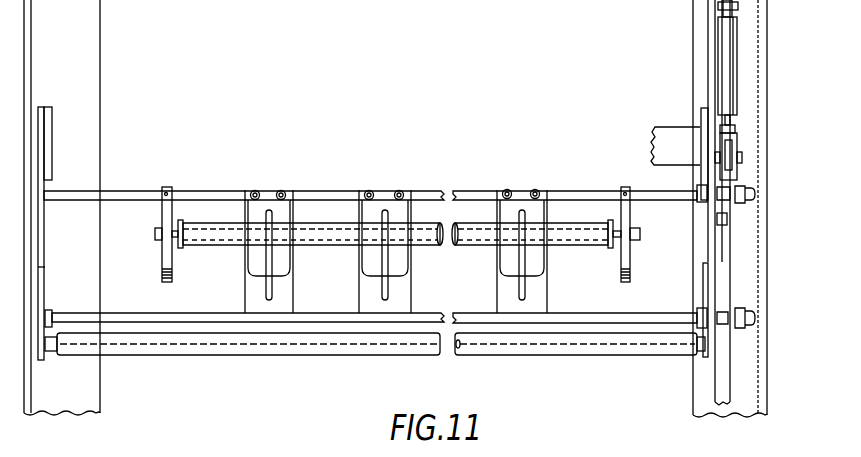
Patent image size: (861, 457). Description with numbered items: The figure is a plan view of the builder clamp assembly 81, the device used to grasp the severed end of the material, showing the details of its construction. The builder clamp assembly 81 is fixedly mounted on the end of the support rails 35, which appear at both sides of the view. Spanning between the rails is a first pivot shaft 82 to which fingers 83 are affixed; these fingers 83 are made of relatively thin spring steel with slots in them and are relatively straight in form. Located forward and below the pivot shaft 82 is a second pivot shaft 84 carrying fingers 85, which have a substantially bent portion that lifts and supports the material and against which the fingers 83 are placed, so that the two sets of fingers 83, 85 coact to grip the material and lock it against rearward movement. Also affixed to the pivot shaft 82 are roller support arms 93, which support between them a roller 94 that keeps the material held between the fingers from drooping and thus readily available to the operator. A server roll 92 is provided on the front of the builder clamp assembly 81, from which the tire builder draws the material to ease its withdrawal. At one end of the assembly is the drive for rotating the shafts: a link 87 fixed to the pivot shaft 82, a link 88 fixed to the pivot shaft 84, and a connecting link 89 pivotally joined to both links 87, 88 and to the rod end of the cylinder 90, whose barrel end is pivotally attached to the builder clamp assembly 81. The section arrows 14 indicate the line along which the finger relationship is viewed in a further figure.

The section line of FIG. 14 is at (298, 106).
The support rails 35 is at (70, 400).
The builder clamp assembly 81 is at (421, 176).
The first pivot shaft 82 is at (186, 192).
The fingers 83 is at (268, 196).
The pivot shaft 84 is at (120, 318).
The fingers 85 is at (253, 289).
The link 87 is at (740, 200).
The link 88 is at (740, 330).
The connecting link 89 is at (728, 253).
The cylinder 90 is at (723, 42).
The server roll 92 is at (541, 340).
The roller support arms 93 is at (162, 212).
The roller 94 is at (583, 237).